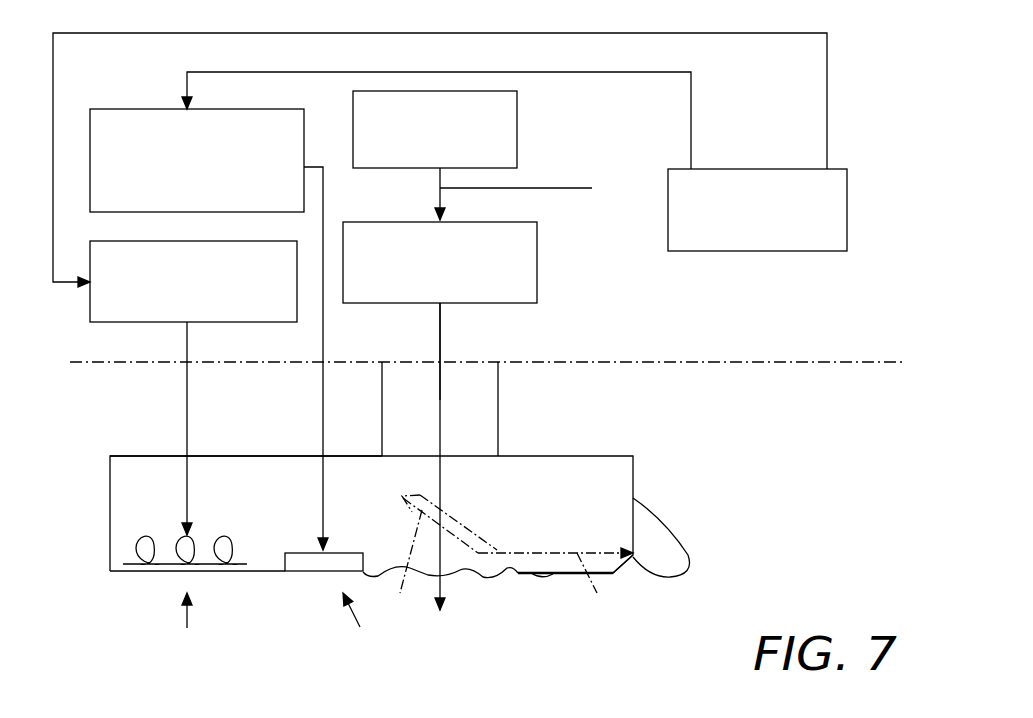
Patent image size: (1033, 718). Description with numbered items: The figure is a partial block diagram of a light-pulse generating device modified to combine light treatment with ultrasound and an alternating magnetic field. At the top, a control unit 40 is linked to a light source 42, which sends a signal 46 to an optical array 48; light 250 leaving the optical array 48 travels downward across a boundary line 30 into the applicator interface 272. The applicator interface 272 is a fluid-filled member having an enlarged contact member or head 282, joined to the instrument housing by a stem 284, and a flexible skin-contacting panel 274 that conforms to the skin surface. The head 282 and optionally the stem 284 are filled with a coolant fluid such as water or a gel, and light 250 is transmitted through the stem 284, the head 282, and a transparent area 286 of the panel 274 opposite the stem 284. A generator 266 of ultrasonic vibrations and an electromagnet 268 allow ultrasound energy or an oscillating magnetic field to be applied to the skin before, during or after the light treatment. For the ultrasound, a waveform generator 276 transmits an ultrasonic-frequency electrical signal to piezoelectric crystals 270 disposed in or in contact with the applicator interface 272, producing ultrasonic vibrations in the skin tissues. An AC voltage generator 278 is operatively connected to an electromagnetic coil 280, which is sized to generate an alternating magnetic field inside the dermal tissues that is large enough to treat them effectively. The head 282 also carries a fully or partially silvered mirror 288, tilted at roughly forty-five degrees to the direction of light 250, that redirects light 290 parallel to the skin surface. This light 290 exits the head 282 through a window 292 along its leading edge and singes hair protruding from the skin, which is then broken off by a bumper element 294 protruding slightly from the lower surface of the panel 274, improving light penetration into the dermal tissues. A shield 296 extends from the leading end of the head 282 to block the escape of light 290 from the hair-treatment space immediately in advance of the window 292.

The boundary line 30 is at (730, 362).
The control unit 40 is at (847, 185).
The light source 42 is at (517, 110).
The signal line 46 is at (536, 198).
The optical array 48 is at (537, 247).
The light 250 is at (440, 323).
The generator of ultrasonic vibrations 266 is at (368, 634).
The electromagnet 268 is at (194, 634).
The piezoelectric crystal 270 is at (307, 571).
The applicator interface 272 is at (606, 432).
The flexible panel 274 is at (148, 572).
The waveform generator 276 is at (110, 108).
The AC voltage generator 278 is at (90, 302).
The electromagnetic coil 280 is at (150, 537).
The head 282 is at (265, 456).
The stem 284 is at (498, 399).
The transparent area 286 is at (460, 572).
The mirror 288 is at (509, 558).
The light 290 is at (605, 587).
The window 292 is at (622, 570).
The bumper element 294 is at (553, 573).
The shield 296 is at (675, 537).